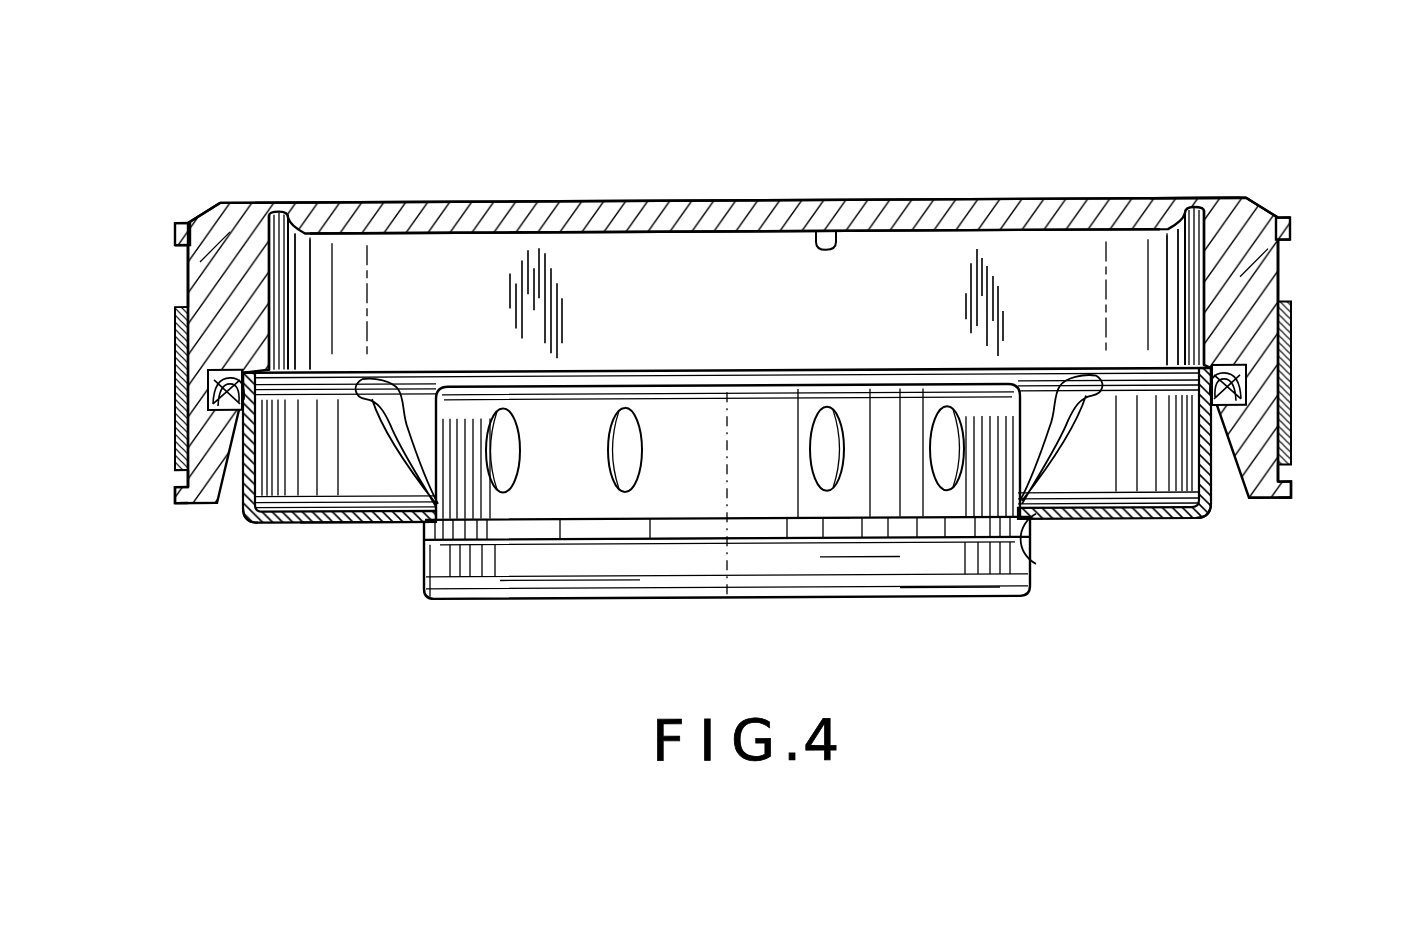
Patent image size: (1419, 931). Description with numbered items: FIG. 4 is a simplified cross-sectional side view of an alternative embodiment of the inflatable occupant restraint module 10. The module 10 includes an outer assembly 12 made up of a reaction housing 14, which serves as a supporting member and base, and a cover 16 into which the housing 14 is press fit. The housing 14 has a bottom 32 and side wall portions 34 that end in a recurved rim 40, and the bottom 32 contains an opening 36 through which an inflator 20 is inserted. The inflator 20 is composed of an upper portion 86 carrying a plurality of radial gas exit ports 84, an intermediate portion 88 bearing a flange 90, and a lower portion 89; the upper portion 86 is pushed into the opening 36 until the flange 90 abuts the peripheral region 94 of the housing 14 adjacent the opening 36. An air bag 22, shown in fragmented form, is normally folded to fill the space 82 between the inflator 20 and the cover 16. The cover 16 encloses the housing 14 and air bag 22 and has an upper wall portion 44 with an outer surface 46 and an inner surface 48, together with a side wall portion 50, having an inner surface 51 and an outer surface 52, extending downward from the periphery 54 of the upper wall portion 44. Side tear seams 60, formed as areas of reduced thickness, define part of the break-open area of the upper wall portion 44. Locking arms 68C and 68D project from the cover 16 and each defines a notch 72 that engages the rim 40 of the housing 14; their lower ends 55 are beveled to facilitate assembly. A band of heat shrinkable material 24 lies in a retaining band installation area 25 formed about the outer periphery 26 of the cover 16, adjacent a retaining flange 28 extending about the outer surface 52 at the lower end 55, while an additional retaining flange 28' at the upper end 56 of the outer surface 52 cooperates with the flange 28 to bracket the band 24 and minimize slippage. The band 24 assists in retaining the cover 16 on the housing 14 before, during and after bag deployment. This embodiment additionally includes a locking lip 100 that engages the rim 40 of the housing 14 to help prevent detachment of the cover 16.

The inflatable occupant restraint module 10 is at (1198, 134).
The outer assembly 12 is at (160, 159).
The reaction housing 14 is at (303, 526).
The cover 16 is at (514, 215).
The inflator 20 is at (710, 460).
The air bag 22 is at (400, 435).
The band of heat shrinkable material 24 is at (178, 332).
The retaining band installation area 25 is at (178, 442).
The outer periphery 26 is at (184, 298).
The retaining flange 28 is at (745, 346).
The additional retaining flange 28' is at (137, 209).
The bottom 32 is at (405, 526).
The side wall portions 34 is at (256, 512).
The opening 36 is at (1034, 565).
The recurved rim 40 is at (205, 382).
The upper wall portion 44 is at (639, 214).
The outer surface 46 is at (748, 204).
The inner surface 48 is at (834, 236).
The side wall portion 50 is at (240, 250).
The inner surface 51 is at (270, 303).
The outer surface 52 is at (178, 243).
The periphery 54 is at (294, 212).
The lower end 55 is at (200, 508).
The upper end 56 is at (203, 208).
The side tear seams 60 is at (276, 222).
The locking arm 68C is at (215, 290).
The locking arm 68D is at (1286, 252).
The notch 72 is at (218, 410).
The space 82 is at (702, 320).
The radial gas exit ports 84 is at (627, 487).
The upper portion 86 is at (783, 500).
The intermediate portion 88 is at (868, 543).
The lower portion 89 is at (948, 583).
The flange 90 is at (568, 530).
The peripheral region 94 is at (455, 527).
The locking lip 100 is at (232, 377).